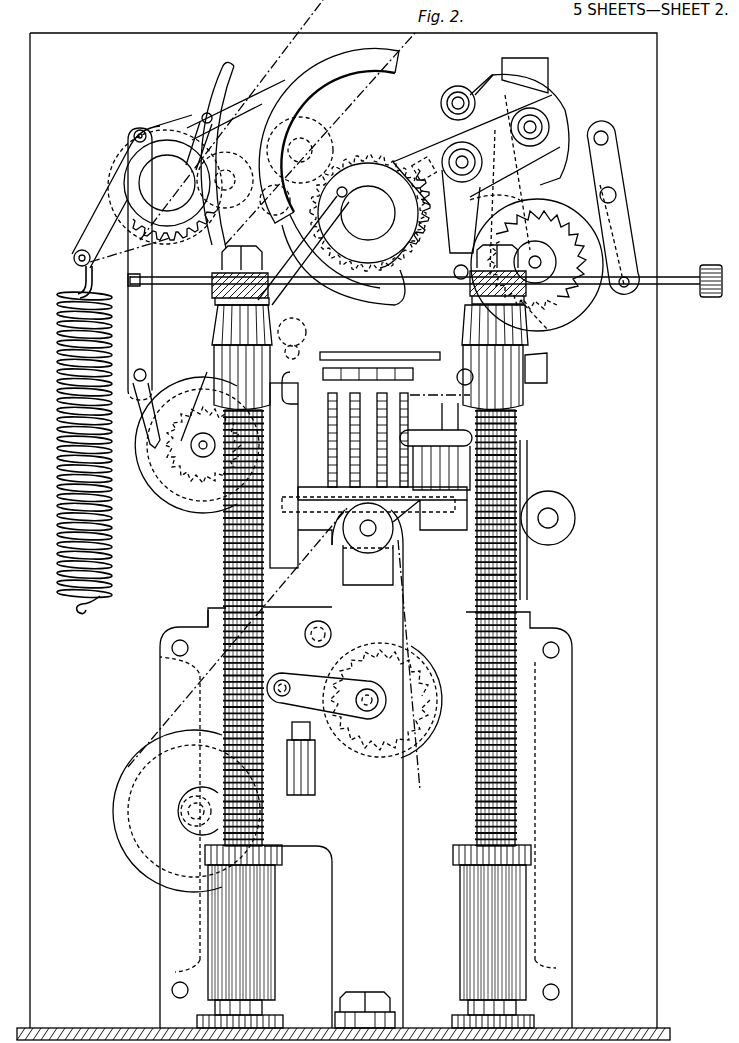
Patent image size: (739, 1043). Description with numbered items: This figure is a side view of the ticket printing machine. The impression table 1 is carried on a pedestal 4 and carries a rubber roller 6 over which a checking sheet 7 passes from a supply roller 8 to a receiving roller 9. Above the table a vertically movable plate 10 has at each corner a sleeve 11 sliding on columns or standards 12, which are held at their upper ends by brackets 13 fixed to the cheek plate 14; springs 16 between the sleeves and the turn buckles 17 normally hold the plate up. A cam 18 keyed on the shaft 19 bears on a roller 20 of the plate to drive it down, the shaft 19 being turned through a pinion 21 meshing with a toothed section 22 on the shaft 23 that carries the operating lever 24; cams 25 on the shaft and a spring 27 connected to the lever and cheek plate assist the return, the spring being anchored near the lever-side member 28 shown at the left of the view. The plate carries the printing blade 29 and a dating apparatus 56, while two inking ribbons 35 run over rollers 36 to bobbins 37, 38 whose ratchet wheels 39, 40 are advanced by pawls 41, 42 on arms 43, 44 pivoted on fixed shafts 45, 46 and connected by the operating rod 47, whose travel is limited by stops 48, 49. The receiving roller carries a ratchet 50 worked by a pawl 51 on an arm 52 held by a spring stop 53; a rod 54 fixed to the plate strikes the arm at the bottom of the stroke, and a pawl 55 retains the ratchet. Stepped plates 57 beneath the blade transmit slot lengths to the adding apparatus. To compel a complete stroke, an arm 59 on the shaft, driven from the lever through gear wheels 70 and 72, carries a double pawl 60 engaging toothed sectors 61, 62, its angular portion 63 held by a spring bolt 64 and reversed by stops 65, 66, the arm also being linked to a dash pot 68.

The impression table 1 is at (374, 516).
The pedestal 4 is at (301, 1030).
The roller 6 is at (390, 523).
The checking sheet 7 is at (302, 580).
The supply roller 8 is at (186, 811).
The receiving roller 9 is at (418, 735).
The plate 10 is at (370, 334).
The sleeve 11 is at (368, 377).
The columns or standards 12 is at (226, 572).
The bracket 13 is at (214, 272).
The cheek plate 14 is at (324, 786).
The spring 16 is at (226, 597).
The turn buckle 17 is at (365, 936).
The cam 18 is at (396, 55).
The shaft 19 is at (368, 213).
The roller 20 is at (330, 290).
The pinion 21 is at (408, 210).
The toothed section 22 is at (318, 144).
The shaft 23 is at (165, 187).
The operating lever 24 is at (274, 395).
The cam 25 is at (215, 84).
The spring 27 is at (110, 540).
The lever 28 is at (132, 191).
The metal blade 29 is at (342, 368).
The inking ribbon 35 is at (440, 393).
The roller 36 is at (294, 400).
The bobbin 37 is at (156, 490).
The bobbin 38 is at (580, 300).
The ratchet wheel 39 is at (203, 445).
The ratchet wheel 40 is at (537, 260).
The pawl 41 is at (138, 420).
The pawl 42 is at (623, 270).
The arm 43 is at (140, 264).
The arm 44 is at (613, 207).
The fixed shaft 45 is at (139, 130).
The fixed shaft 46 is at (606, 131).
The operating rod 47 is at (690, 285).
The stop 48 is at (453, 270).
The stop 49 is at (548, 322).
The ratchet 50 is at (428, 716).
The pawl 51 is at (300, 676).
The arm 52 is at (359, 713).
The spring stop 53 is at (292, 716).
The rod 54 is at (284, 475).
The pawl 55 is at (344, 627).
The dating apparatus 56 is at (288, 328).
The stepped plate 57 is at (352, 462).
The arm 59 is at (424, 150).
The double pawl 60 is at (539, 136).
The toothed sector 61 is at (495, 188).
The toothed sector 62 is at (519, 172).
The angular portion 63 is at (483, 165).
The spring bolt 64 is at (478, 108).
The stop 65 is at (525, 75).
The stop 66 is at (547, 368).
The dash pot 68 is at (436, 446).
The gear wheel 70 is at (376, 162).
The gear wheel 72 is at (205, 125).